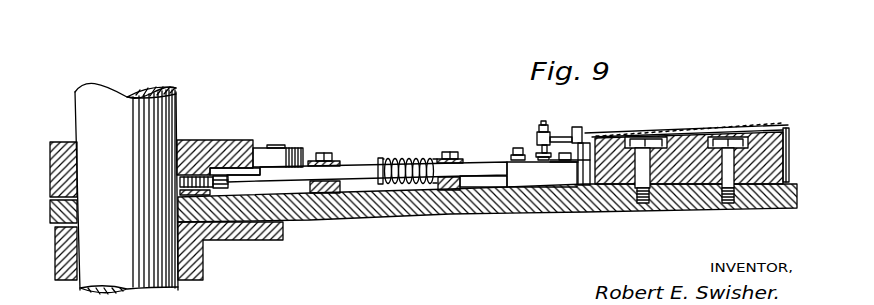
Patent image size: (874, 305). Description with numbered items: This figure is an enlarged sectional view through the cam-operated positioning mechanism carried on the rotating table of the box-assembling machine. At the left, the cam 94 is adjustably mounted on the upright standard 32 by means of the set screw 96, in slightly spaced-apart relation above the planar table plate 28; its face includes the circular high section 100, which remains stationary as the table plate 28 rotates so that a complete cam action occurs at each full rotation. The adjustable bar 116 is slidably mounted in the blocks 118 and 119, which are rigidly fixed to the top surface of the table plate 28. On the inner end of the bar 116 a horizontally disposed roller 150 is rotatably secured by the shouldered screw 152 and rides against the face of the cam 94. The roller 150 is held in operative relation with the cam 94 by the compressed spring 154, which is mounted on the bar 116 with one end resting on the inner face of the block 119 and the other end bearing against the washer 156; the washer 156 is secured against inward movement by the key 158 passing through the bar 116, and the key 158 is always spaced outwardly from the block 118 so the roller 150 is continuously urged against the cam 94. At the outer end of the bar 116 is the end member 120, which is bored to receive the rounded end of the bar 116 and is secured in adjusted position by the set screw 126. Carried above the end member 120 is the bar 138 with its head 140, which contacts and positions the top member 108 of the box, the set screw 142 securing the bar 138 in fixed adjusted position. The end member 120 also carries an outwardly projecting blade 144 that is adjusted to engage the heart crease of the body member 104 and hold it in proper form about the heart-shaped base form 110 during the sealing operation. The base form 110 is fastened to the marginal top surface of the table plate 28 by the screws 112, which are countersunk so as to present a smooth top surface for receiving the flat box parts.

The standard 32 is at (178, 95).
The cam 94 is at (198, 147).
The set screw 96 is at (228, 188).
The circular high section 100 is at (258, 149).
The shouldered screw 152 is at (284, 149).
The roller 150 is at (311, 157).
The block 118 is at (319, 198).
The key 158 is at (381, 161).
The washer 156 is at (398, 158).
The compressed spring 154 is at (441, 154).
The block 119 is at (443, 214).
The table plate 28 is at (379, 222).
The adjustable bar 116 is at (484, 175).
The end member 120 is at (544, 176).
The set screw 126 is at (519, 152).
The bar 138 is at (533, 139).
The set screw 142 is at (543, 121).
The head 140 is at (578, 128).
The blade 144 is at (586, 185).
The top member 108 is at (748, 124).
The body member 104 is at (790, 143).
The base form 110 is at (784, 168).
The screws 112 is at (720, 208).